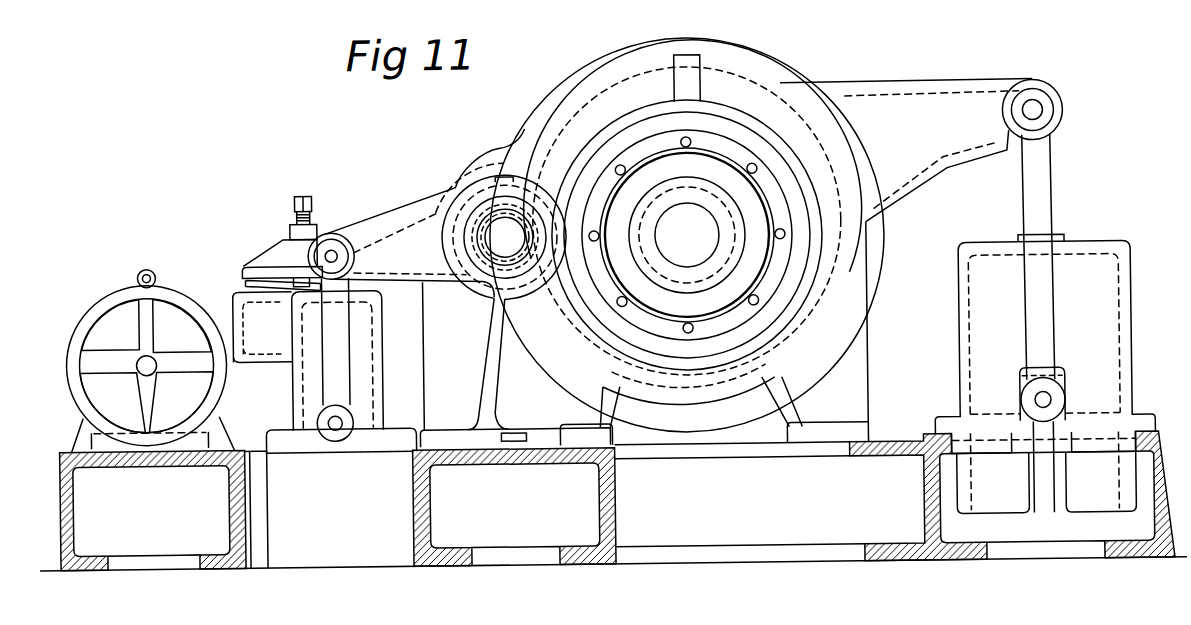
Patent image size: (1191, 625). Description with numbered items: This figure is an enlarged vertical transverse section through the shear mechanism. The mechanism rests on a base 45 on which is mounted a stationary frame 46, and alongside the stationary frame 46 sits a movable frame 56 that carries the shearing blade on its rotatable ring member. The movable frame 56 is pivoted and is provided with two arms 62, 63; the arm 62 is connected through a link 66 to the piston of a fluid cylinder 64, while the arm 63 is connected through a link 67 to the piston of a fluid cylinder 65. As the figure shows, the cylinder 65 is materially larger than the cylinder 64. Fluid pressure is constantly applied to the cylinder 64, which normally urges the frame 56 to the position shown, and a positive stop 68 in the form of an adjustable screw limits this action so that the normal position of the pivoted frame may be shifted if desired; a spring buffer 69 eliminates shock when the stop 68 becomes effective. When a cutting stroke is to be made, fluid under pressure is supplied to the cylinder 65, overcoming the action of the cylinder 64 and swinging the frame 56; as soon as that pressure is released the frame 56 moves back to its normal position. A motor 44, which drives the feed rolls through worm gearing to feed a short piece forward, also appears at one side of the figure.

The motor 44 is at (104, 306).
The base 45 is at (610, 562).
The stationary frame 46 is at (871, 363).
The movable frame 56 is at (880, 232).
The arm 62 is at (437, 214).
The arm 63 is at (922, 150).
The fluid cylinder 64 is at (365, 330).
The fluid cylinder 65 is at (1110, 304).
The link 66 is at (340, 347).
The link 67 is at (1044, 208).
The positive stop 68 is at (294, 219).
The spring buffer 69 is at (246, 277).